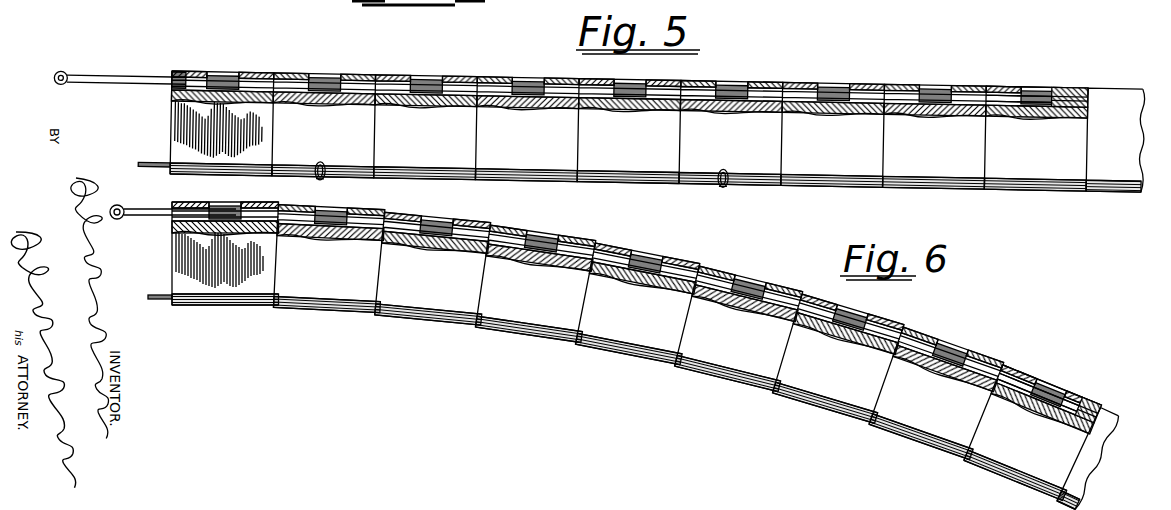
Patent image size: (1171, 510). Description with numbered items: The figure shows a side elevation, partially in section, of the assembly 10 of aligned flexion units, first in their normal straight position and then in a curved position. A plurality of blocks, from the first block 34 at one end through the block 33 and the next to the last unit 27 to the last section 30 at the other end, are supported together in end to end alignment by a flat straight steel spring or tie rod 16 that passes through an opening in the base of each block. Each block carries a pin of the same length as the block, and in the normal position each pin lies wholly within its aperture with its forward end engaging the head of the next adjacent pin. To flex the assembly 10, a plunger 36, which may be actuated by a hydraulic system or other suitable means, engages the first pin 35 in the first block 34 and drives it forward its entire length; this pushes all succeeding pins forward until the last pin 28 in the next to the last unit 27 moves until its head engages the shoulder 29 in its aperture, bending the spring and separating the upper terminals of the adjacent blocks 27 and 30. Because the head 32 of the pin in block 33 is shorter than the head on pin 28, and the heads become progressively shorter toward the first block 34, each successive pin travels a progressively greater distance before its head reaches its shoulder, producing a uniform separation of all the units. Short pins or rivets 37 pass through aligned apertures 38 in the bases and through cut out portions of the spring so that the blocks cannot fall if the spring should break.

In FIG. 5, the frame assembly 10 is at (802, 5).
In FIG. 5, the spring or tie rod 16 is at (147, 163).
In FIG. 6, the spring or tie rod 16 is at (151, 294).
In FIG. 5, the next to the last unit 27 is at (1079, 90).
In FIG. 6, the next to the last unit 27 is at (1087, 410).
In FIG. 5, the last pin 28 is at (1000, 88).
In FIG. 6, the last pin 28 is at (1016, 378).
In FIG. 5, the shoulder 29 is at (1050, 92).
In FIG. 6, the shoulder 29 is at (1061, 395).
In FIG. 5, the last section 30 is at (1115, 140).
In FIG. 6, the last section 30 is at (1112, 424).
In FIG. 5, the head of the pin 32 is at (916, 92).
In FIG. 6, the head of the pin 32 is at (955, 359).
In FIG. 5, the block 33 is at (935, 136).
In FIG. 5, the first block 34 is at (203, 123).
In FIG. 6, the first block 34 is at (221, 279).
In FIG. 5, the first pin 35 is at (180, 74).
In FIG. 5, the plunger 36 is at (105, 75).
In FIG. 6, the plunger 36 is at (147, 210).
In FIG. 5, the short pins or rivets 37 is at (323, 160).
In FIG. 5, the aligned apertures 38 is at (317, 180).